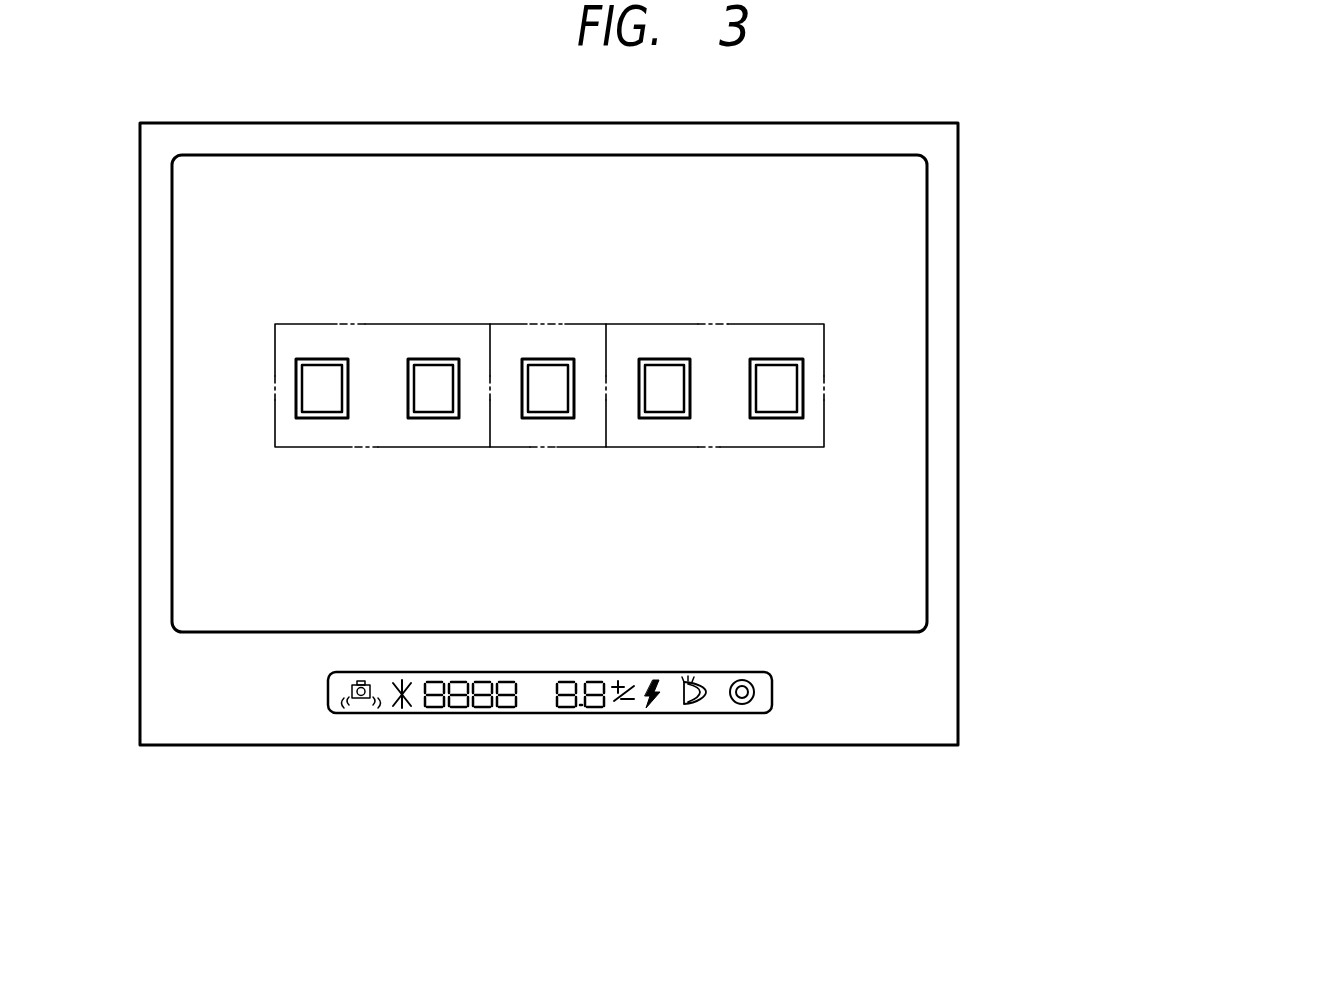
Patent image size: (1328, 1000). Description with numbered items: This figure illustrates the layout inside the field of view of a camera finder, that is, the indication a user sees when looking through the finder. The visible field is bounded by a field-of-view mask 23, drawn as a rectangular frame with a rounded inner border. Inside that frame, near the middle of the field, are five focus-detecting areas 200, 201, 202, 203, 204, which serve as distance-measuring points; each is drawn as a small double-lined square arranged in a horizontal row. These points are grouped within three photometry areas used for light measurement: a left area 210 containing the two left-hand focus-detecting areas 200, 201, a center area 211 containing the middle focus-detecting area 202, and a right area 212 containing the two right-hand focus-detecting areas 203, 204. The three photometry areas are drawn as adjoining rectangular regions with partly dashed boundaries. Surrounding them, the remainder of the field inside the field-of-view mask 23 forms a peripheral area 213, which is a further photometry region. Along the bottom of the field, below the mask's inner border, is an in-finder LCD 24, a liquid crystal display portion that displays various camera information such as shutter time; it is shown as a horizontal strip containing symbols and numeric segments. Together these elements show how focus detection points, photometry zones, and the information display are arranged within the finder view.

The field-of-view mask 23 is at (928, 498).
The in-finder LCD 24 is at (683, 713).
The focus-detecting area 200 is at (323, 418).
The focus-detecting area 201 is at (440, 418).
The focus-detecting area 202 is at (560, 418).
The focus-detecting area 203 is at (672, 418).
The focus-detecting area 204 is at (785, 418).
The left area 210 is at (322, 323).
The center area 211 is at (563, 283).
The right area 212 is at (762, 323).
The peripheral area 213 is at (920, 252).